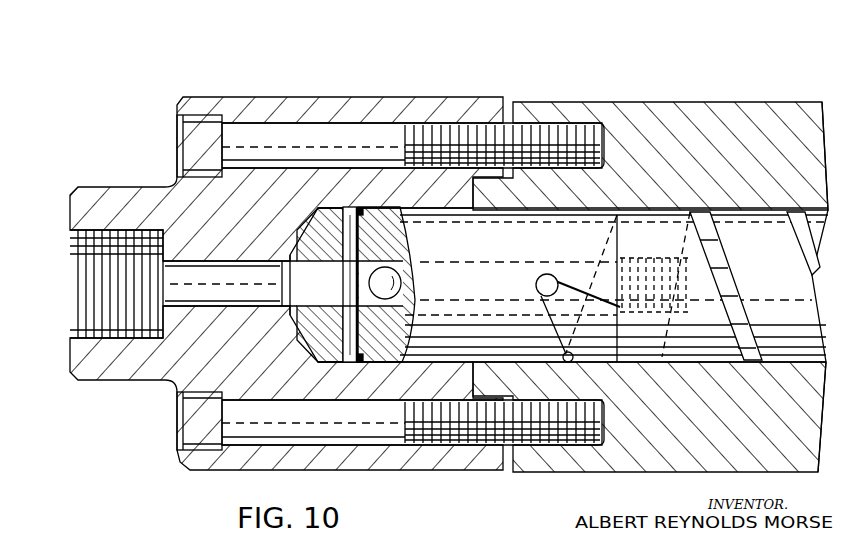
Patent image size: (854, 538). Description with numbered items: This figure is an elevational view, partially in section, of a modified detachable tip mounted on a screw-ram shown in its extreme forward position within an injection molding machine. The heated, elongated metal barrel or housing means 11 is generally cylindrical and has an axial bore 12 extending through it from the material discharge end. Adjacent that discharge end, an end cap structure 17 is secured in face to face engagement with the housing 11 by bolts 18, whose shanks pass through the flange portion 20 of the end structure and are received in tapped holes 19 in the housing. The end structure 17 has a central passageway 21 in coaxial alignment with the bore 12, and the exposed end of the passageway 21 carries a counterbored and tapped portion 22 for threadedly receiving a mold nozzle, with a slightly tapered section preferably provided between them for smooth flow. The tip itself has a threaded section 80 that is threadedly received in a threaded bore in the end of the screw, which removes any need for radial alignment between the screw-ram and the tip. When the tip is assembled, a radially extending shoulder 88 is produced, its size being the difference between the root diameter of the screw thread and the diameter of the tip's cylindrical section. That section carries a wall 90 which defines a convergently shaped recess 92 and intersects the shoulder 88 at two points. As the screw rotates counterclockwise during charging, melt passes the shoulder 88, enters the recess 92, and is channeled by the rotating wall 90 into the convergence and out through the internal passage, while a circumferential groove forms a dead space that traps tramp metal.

The housing means 11 is at (787, 97).
The axial bore 12 is at (668, 213).
The end cap structure 17 is at (221, 92).
The bolts 18 is at (192, 137).
The tapped holes 19 is at (553, 440).
The flange portion 20 is at (268, 100).
The central passageway 21 is at (390, 352).
The counterbored and tapped portion 22 is at (122, 332).
The threaded section 80 is at (618, 246).
The radially extending shoulder 88 is at (620, 212).
The wall 90 is at (569, 363).
The convergently shaped recess 92 is at (537, 286).